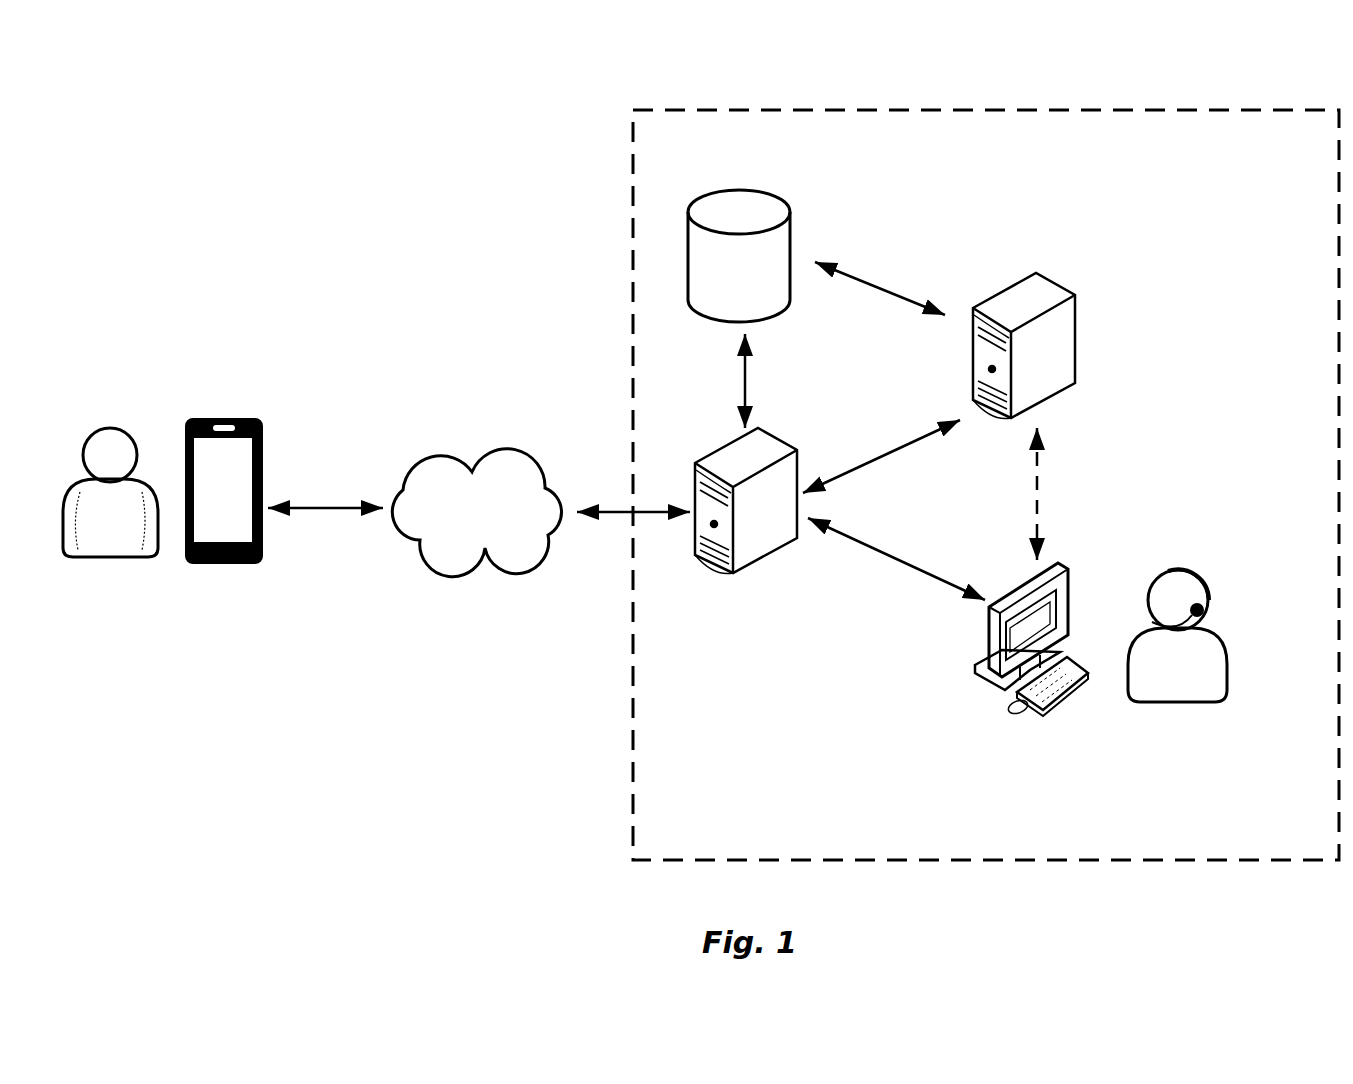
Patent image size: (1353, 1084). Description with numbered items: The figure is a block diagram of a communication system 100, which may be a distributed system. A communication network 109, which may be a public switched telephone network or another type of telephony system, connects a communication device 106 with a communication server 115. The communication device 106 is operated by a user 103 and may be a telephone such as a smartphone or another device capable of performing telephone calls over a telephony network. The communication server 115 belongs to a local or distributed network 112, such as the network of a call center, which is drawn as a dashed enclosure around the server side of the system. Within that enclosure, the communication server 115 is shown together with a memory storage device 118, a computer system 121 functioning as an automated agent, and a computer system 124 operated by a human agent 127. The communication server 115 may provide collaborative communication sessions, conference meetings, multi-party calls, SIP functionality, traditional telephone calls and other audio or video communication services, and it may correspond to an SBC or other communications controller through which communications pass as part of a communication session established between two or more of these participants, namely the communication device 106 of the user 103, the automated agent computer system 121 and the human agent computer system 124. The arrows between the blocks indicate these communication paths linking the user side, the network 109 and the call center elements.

The communication system 100 is at (278, 108).
The user 103 is at (148, 395).
The communication device 106 is at (262, 418).
The communication network 109 is at (505, 467).
The local or distributed network 112 is at (633, 678).
The communication server 115 is at (780, 440).
The memory storage device 118 is at (790, 197).
The computer system functioning as an automated agent 121 is at (1058, 280).
The computer system operated by a human agent 124 is at (1068, 572).
The human agent 127 is at (1207, 555).